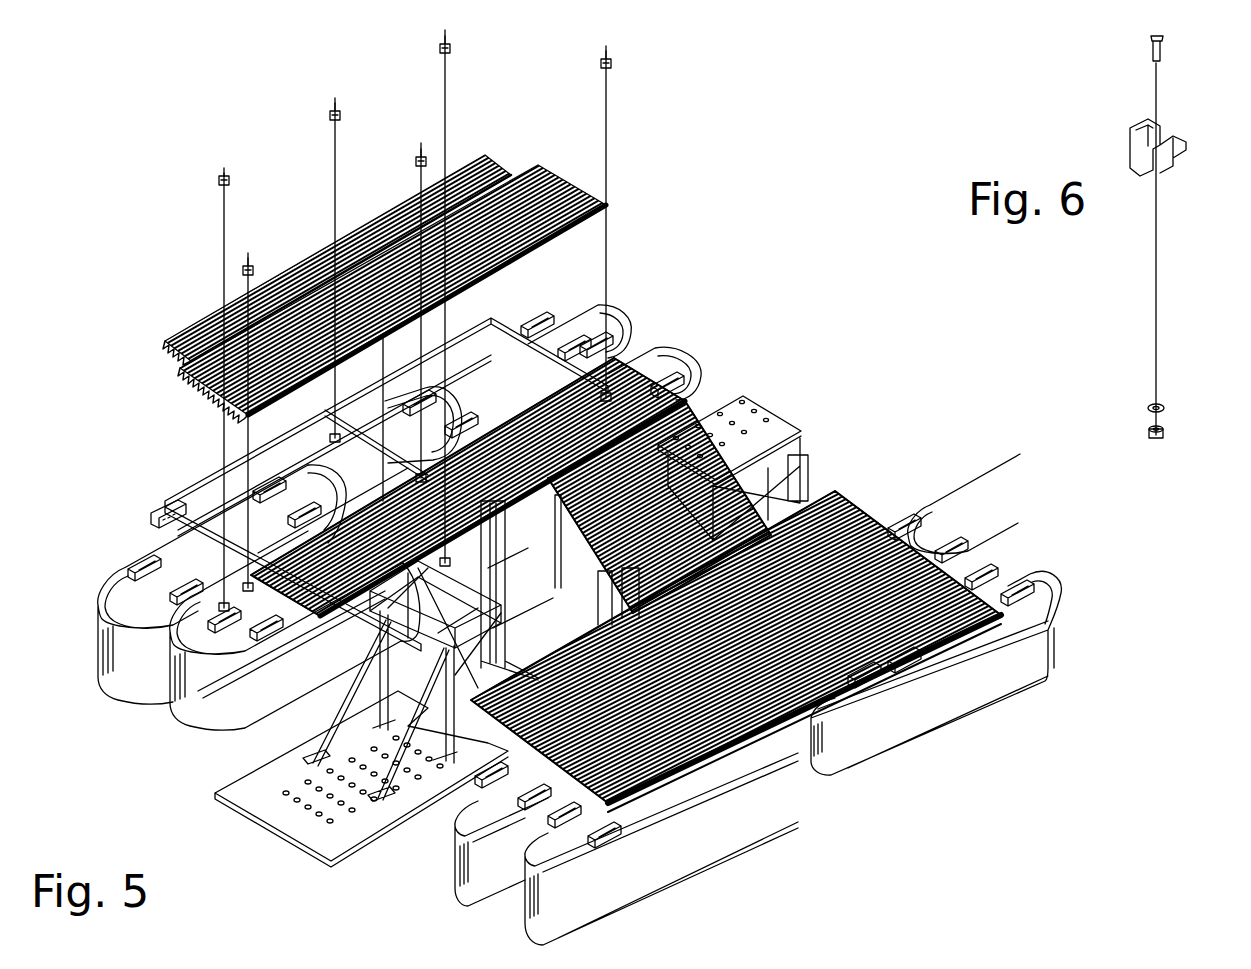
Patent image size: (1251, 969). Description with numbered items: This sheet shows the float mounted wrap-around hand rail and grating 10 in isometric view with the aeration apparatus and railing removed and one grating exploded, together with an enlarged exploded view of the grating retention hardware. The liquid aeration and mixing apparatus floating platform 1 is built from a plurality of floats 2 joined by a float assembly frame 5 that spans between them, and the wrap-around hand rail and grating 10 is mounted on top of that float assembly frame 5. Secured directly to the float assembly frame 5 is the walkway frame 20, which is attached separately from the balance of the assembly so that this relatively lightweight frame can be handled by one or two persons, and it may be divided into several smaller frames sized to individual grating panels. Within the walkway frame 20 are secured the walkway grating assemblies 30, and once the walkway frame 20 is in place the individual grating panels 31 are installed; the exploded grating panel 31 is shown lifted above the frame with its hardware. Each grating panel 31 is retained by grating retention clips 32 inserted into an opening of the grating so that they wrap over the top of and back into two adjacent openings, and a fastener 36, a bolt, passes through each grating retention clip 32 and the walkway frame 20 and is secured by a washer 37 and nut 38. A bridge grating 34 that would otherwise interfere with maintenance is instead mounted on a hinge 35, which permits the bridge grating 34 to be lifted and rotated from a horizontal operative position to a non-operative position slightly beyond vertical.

In FIG. 5, the liquid aeration and mixing apparatus floating platform 1 is at (78, 592).
In FIG. 5, the float 2 is at (190, 717).
In FIG. 5, the float assembly frame 5 is at (140, 509).
In FIG. 5, the float mounted wrap-around hand rail and grating 10 is at (180, 258).
In FIG. 5, the walkway frame 20 is at (160, 477).
In FIG. 5, the walkway grating assembly 30 is at (858, 490).
In FIG. 5, the grating panel 31 is at (478, 148).
In FIG. 5, the grating retention clip 32 is at (594, 50).
In FIG. 6, the grating retention clip 32 is at (1122, 120).
In FIG. 5, the bridge grating 34 is at (613, 508).
In FIG. 5, the hinge 35 is at (550, 500).
In FIG. 5, the fastener (bolt) 36 is at (603, 42).
In FIG. 6, the fastener (bolt) 36 is at (1153, 45).
In FIG. 6, the washer 37 is at (1140, 400).
In FIG. 6, the nut 38 is at (1158, 425).